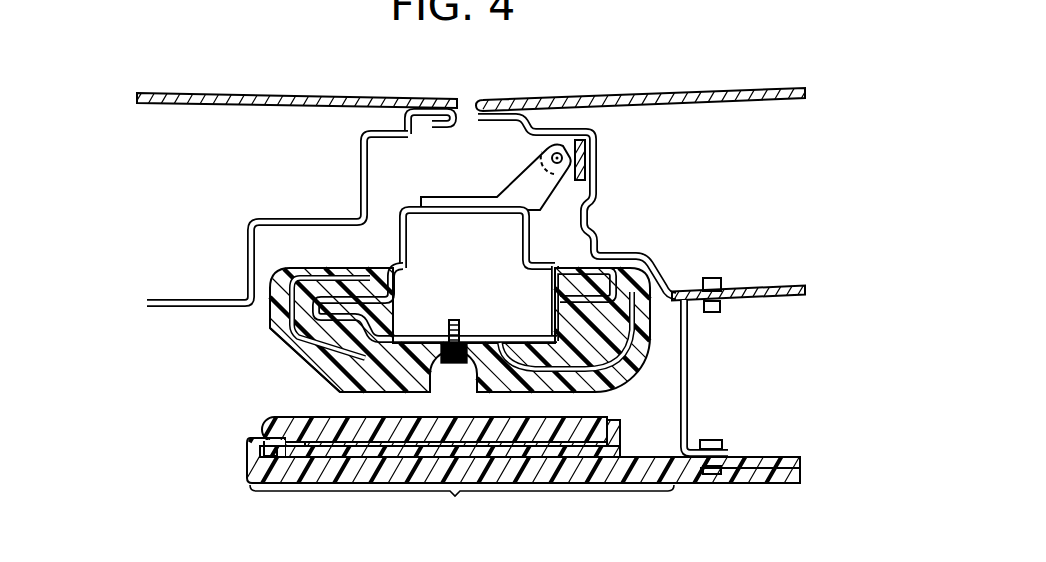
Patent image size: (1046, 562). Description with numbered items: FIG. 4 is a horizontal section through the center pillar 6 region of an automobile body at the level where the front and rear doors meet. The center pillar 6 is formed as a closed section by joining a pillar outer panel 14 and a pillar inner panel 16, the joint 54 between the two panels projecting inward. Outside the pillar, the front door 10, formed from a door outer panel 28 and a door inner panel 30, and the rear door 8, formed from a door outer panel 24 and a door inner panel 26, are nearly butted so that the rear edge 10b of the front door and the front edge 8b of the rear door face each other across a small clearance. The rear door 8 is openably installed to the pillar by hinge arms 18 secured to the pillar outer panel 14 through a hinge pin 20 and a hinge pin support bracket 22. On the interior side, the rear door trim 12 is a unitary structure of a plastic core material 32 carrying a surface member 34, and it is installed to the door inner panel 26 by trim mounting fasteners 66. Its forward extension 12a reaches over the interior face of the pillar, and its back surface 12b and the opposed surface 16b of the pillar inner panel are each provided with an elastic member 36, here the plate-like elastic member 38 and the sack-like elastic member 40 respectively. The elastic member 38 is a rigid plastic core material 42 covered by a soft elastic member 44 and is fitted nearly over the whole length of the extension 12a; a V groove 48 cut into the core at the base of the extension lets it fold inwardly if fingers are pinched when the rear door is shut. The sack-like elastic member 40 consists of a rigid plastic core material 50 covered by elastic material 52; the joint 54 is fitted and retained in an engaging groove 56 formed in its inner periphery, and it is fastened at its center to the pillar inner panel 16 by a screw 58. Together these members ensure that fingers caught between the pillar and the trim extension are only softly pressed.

The center pillar 6 is at (447, 253).
The rear door 8 is at (761, 91).
The front edge of rear door 8b is at (477, 101).
The front door 10 is at (284, 95).
The rear edge of front door 10b is at (456, 101).
The rear door trim 12 is at (528, 459).
The extension 12a is at (462, 503).
The surface of extension 12b is at (571, 456).
The pillar outer panel 14 is at (413, 208).
The pillar inner panel 16 is at (460, 264).
The surface of pillar inner panel 16b is at (468, 311).
The hinge arms 18 is at (509, 187).
The hinge pin 20 is at (552, 158).
The hinge pin support bracket 22 is at (597, 195).
The door outer panel 24 is at (640, 102).
The door inner panel 26 is at (773, 289).
The door outer panel 28 is at (297, 110).
The door inner panel 30 is at (190, 298).
The plastic core material 32 is at (772, 456).
The surface member 34 is at (786, 484).
The elastic member 36 is at (379, 338).
The plate-like elastic member 38 is at (381, 413).
The sack-like elastic member 40 is at (403, 330).
The plastic core material 42 is at (313, 443).
The elastic member 44 is at (267, 423).
The V groove 48 is at (660, 456).
The plastic core material 50 is at (310, 315).
The elastic material 52 is at (277, 340).
The joint 54 is at (328, 290).
The engaging groove 56 is at (372, 315).
The screw 58 is at (455, 318).
The trim mounting fasteners 66 is at (690, 358).